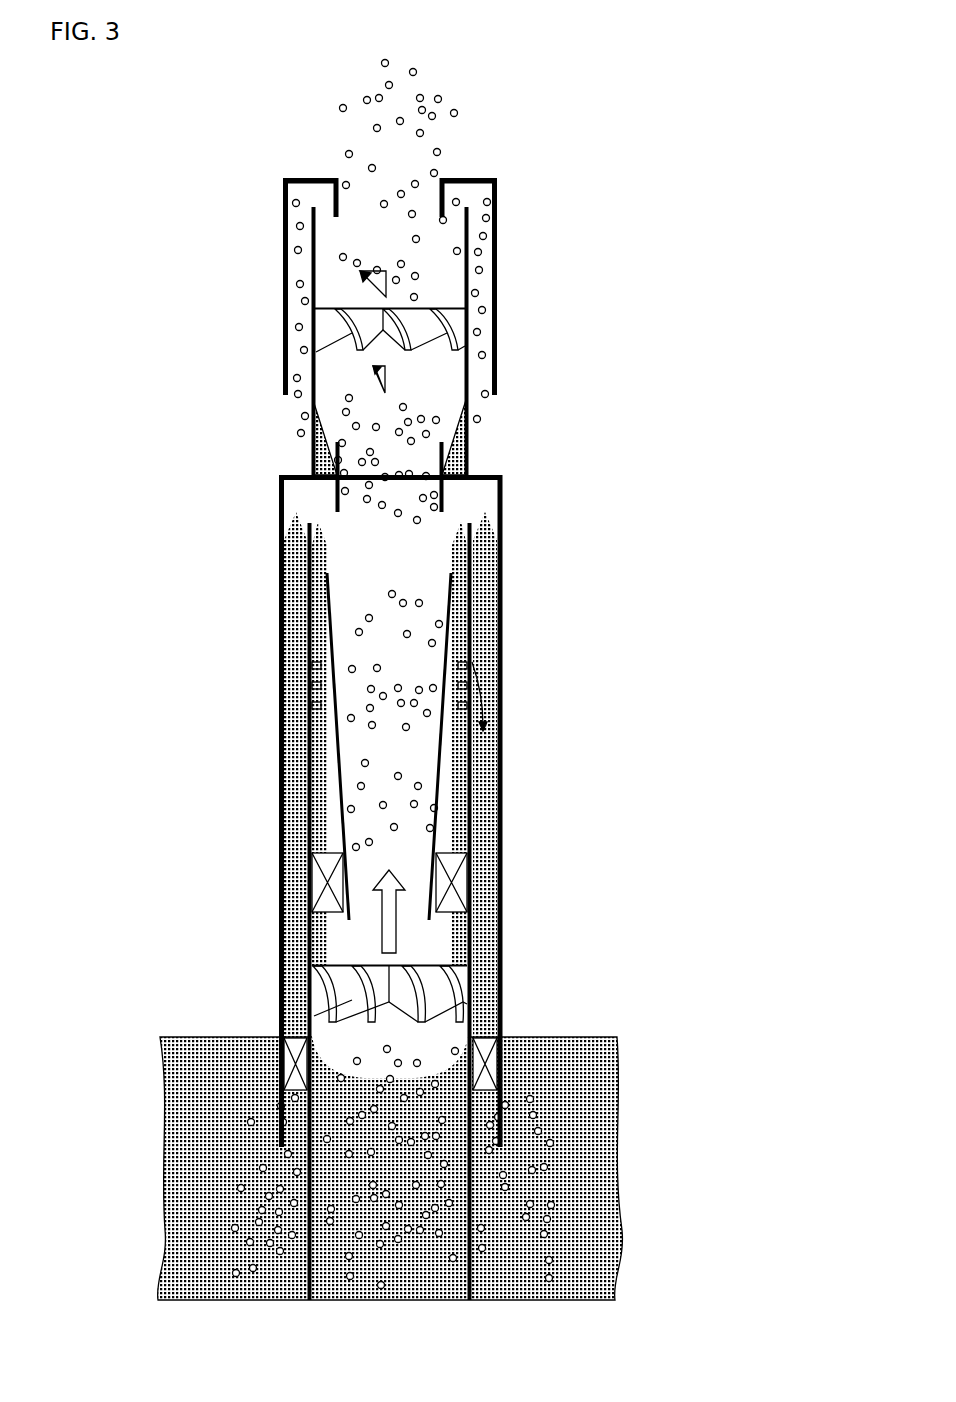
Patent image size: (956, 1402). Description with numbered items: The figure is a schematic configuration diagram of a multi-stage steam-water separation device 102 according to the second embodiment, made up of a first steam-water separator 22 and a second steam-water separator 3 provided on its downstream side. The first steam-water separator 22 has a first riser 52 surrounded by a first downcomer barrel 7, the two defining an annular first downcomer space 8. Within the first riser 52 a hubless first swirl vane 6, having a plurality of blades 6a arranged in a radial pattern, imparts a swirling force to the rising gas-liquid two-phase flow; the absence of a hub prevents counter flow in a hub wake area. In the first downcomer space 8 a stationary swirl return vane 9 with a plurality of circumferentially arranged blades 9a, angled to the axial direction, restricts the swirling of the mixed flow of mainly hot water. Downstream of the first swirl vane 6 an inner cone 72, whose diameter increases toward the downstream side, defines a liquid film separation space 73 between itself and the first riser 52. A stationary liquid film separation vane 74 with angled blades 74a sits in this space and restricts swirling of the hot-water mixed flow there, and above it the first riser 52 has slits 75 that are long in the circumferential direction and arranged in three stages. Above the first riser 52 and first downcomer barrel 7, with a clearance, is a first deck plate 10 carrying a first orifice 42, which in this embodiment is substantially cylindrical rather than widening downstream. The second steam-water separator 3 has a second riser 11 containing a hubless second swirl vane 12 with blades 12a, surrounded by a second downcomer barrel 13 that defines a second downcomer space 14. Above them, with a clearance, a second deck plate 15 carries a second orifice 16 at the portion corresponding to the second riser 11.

The multi-stage steam-water separation device 102 is at (577, 188).
The second steam-water separator 3 is at (504, 316).
The second downcomer barrel 13 is at (284, 247).
The second downcomer space 14 is at (482, 250).
The second deck plate 15 is at (312, 178).
The second orifice 16 is at (447, 192).
The second riser 11 is at (312, 375).
The second swirl vane 12 is at (322, 328).
The blades 12a is at (412, 330).
The first steam-water separator 22 is at (506, 840).
The first deck plate 10 is at (283, 478).
The first orifice 42 is at (443, 458).
The first downcomer barrel 7 is at (281, 613).
The first riser 52 is at (474, 608).
The first downcomer space 8 is at (292, 908).
The slits 75 is at (312, 663).
The inner cone 72 is at (338, 740).
The liquid film separation space 73 is at (453, 780).
The liquid film separation vane 74 is at (462, 880).
The blades 74a is at (328, 852).
The first swirl vane 6 is at (320, 990).
The blades 6a is at (432, 975).
The swirl return vane 9 is at (285, 1060).
The blades 9a is at (484, 1037).